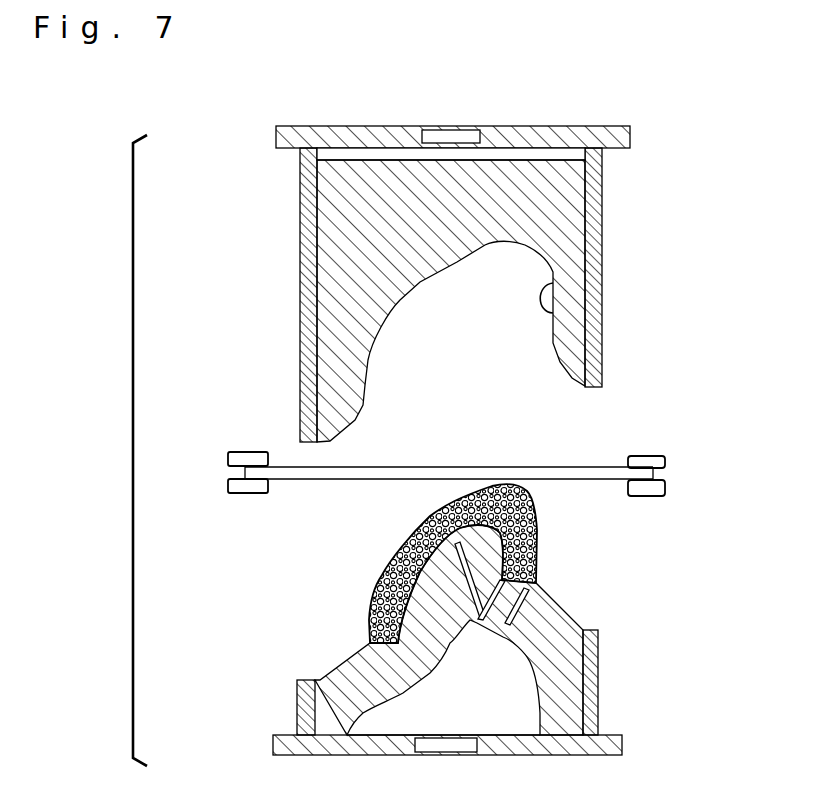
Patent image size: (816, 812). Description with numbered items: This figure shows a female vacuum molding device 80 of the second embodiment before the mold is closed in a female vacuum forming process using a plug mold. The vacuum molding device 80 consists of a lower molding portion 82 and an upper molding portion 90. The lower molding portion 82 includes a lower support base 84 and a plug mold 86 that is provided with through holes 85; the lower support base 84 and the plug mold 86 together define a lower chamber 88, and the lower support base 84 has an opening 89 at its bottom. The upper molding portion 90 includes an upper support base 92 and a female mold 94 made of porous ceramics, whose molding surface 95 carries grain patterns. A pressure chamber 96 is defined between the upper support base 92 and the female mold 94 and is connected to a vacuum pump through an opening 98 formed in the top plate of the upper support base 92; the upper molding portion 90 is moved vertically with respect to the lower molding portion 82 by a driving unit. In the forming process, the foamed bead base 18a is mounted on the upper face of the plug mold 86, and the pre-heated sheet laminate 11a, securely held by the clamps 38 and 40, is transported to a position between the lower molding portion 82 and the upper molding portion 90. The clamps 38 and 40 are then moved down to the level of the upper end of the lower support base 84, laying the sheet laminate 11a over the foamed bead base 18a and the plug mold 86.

The female vacuum molding device 80 is at (690, 318).
The upper molding portion 90 is at (612, 210).
The upper support base 92 is at (598, 181).
The female mold 94 is at (578, 242).
The molding surface 95 is at (557, 307).
The pressure chamber 96 is at (388, 158).
The opening 98 is at (470, 135).
The sheet laminate 11a is at (586, 478).
The clamp 38 is at (228, 455).
The clamp 40 is at (228, 483).
The lower molding portion 82 is at (605, 657).
The lower support base 84 is at (600, 696).
The through holes 85 is at (407, 700).
The plug mold 86 is at (340, 712).
The lower chamber 88 is at (520, 712).
The opening 89 is at (466, 752).
The foamed bead base 18a is at (538, 530).